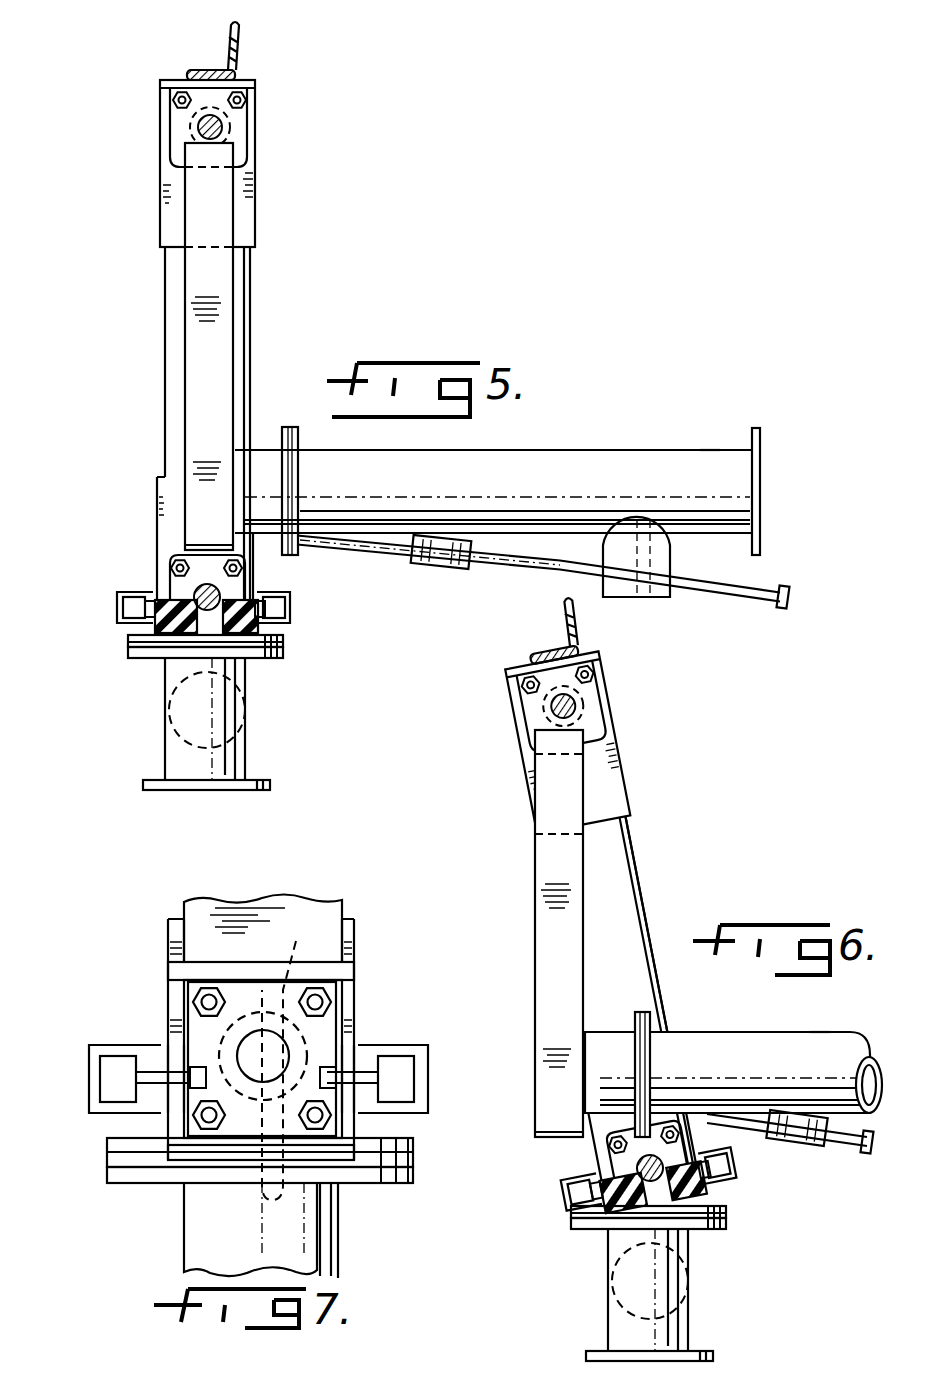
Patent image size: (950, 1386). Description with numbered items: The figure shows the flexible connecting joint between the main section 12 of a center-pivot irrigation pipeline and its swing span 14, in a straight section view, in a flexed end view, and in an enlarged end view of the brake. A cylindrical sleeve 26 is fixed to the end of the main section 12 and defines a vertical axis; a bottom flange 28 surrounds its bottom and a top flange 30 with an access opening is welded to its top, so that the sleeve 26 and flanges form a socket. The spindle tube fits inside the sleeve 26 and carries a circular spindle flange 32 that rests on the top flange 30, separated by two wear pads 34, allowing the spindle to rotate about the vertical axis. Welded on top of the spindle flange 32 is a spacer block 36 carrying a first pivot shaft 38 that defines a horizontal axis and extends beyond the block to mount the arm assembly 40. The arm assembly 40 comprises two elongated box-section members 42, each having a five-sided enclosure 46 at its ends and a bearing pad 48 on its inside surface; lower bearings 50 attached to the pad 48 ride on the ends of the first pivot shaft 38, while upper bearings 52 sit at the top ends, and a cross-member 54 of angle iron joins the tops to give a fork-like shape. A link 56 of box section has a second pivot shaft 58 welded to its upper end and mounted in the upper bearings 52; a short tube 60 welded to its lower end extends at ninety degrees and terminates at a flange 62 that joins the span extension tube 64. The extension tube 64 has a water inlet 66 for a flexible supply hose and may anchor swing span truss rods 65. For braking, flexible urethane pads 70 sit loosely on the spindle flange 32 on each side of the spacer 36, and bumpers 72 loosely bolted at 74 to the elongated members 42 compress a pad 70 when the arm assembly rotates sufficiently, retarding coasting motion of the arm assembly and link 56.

In FIG. 5, the main section 12 is at (246, 750).
In FIG. 6, the main section 12 is at (690, 1316).
In FIG. 5, the swing span 14 is at (708, 450).
In FIG. 6, the swing span 14 is at (822, 1032).
In FIG. 5, the cylindrical sleeve 26 is at (166, 750).
In FIG. 6, the cylindrical sleeve 26 is at (610, 1335).
In FIG. 7, the cylindrical sleeve 26 is at (192, 1262).
In FIG. 5, the bottom flange 28 is at (145, 788).
In FIG. 6, the bottom flange 28 is at (700, 1352).
In FIG. 5, the top flange 30 is at (272, 662).
In FIG. 6, the top flange 30 is at (574, 1232).
In FIG. 7, the top flange 30 is at (118, 1183).
In FIG. 5, the spindle flange 32 is at (126, 652).
In FIG. 6, the spindle flange 32 is at (573, 1215).
In FIG. 7, the spindle flange 32 is at (107, 1145).
In FIG. 5, the wear pads 34 is at (284, 650).
In FIG. 6, the wear pads 34 is at (728, 1230).
In FIG. 7, the wear pads 34 is at (415, 1179).
In FIG. 5, the spacer block 36 is at (220, 606).
In FIG. 6, the spacer block 36 is at (648, 1210).
In FIG. 7, the spacer block 36 is at (268, 1200).
In FIG. 5, the first pivot shaft 38 is at (208, 584).
In FIG. 6, the first pivot shaft 38 is at (640, 1155).
In FIG. 7, the first pivot shaft 38 is at (345, 1036).
In FIG. 6, the arm assembly 40 is at (642, 880).
In FIG. 5, the elongated members 42 is at (167, 292).
In FIG. 6, the elongated members 42 is at (630, 925).
In FIG. 7, the elongated members 42 is at (305, 895).
In FIG. 7, the five-sided enclosure 46 is at (356, 998).
In FIG. 5, the bearing pad 48 is at (165, 195).
In FIG. 7, the bearing pad 48 is at (356, 932).
In FIG. 5, the lower bearings 50 is at (170, 560).
In FIG. 6, the lower bearings 50 is at (692, 1140).
In FIG. 7, the lower bearings 50 is at (280, 985).
In FIG. 5, the upper bearings 52 is at (167, 118).
In FIG. 6, the upper bearings 52 is at (522, 736).
In FIG. 5, the cross-member 54 is at (238, 46).
In FIG. 6, the cross-member 54 is at (556, 645).
In FIG. 5, the link 56 is at (228, 322).
In FIG. 6, the link 56 is at (534, 942).
In FIG. 5, the second pivot shaft 58 is at (222, 126).
In FIG. 6, the second pivot shaft 58 is at (570, 716).
In FIG. 5, the short tube 60 is at (259, 450).
In FIG. 6, the short tube 60 is at (605, 1050).
In FIG. 5, the flange 62 is at (298, 430).
In FIG. 6, the flange 62 is at (652, 1010).
In FIG. 5, the span extension tube 64 is at (636, 452).
In FIG. 6, the span extension tube 64 is at (795, 1035).
In FIG. 5, the swing span truss rods 65 is at (716, 602).
In FIG. 6, the swing span truss rods 65 is at (852, 1150).
In FIG. 5, the water inlet 66 is at (668, 556).
In FIG. 5, the brake pads 70 is at (160, 632).
In FIG. 6, the brake pads 70 is at (603, 1175).
In FIG. 7, the brake pads 70 is at (183, 1030).
In FIG. 5, the bumpers 72 is at (131, 597).
In FIG. 6, the bumpers 72 is at (570, 1188).
In FIG. 7, the bumpers 72 is at (106, 1052).
In FIG. 5, the bolts 74 is at (118, 612).
In FIG. 6, the bolts 74 is at (566, 1205).
In FIG. 7, the bolts 74 is at (130, 1080).